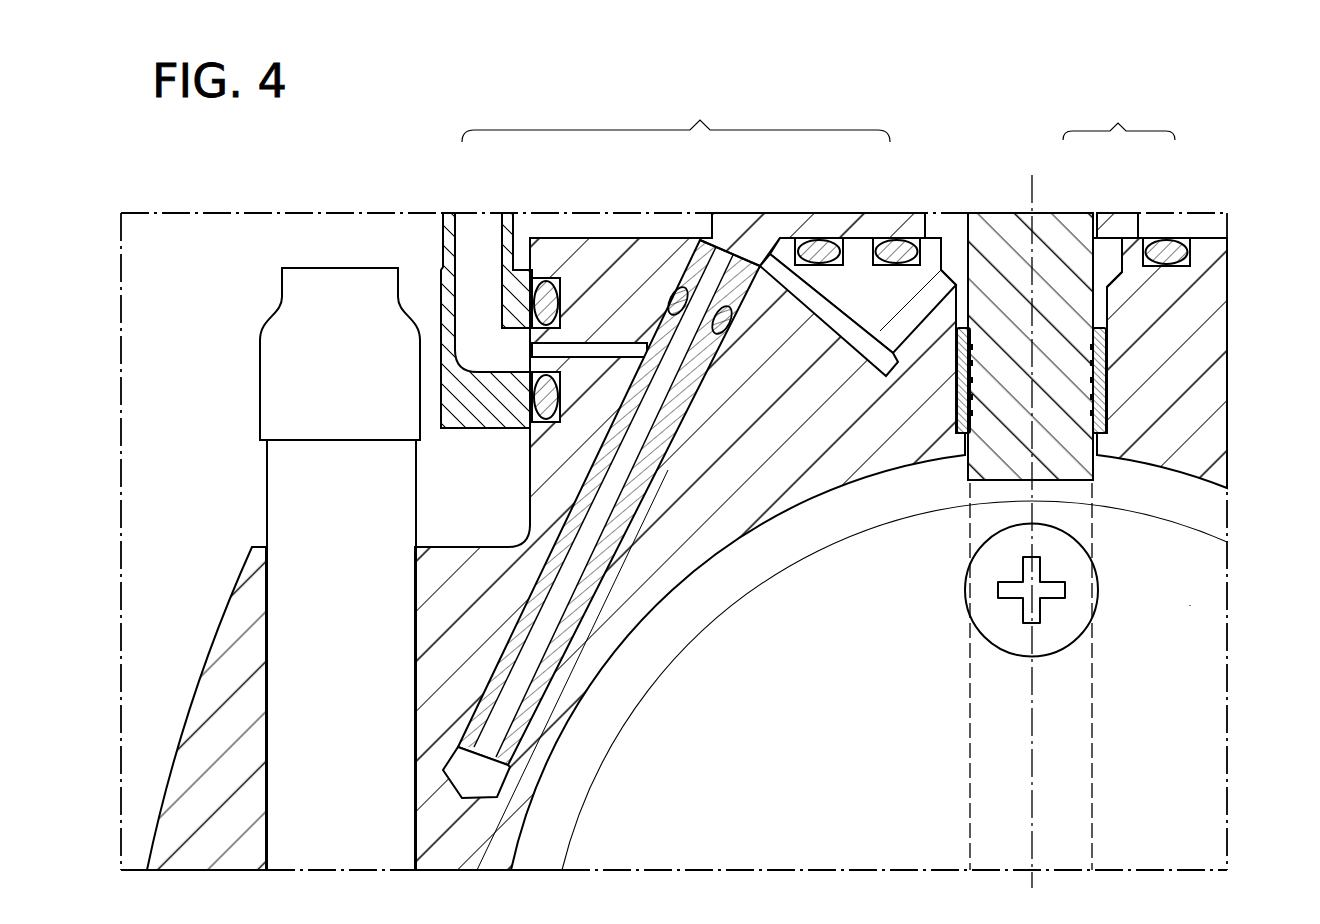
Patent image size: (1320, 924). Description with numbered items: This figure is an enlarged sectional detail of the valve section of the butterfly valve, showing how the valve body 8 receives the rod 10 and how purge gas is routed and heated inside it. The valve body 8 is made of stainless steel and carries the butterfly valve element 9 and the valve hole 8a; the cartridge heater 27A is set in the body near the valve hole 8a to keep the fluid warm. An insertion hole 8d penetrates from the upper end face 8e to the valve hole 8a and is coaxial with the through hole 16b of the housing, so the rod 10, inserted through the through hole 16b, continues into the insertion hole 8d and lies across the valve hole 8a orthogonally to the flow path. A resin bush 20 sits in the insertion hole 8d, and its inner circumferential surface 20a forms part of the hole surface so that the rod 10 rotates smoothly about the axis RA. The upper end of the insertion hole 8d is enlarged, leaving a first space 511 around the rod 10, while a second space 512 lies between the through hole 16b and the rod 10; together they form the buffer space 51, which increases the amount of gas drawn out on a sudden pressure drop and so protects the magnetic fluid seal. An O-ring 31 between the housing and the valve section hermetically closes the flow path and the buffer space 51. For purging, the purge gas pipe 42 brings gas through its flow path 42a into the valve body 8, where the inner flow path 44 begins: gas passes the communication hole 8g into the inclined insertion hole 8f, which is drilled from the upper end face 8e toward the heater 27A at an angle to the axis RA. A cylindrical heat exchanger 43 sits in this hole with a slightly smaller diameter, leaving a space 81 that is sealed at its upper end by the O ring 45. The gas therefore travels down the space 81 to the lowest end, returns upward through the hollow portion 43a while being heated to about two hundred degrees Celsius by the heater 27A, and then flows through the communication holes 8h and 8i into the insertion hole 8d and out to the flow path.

The valve body 8 is at (222, 564).
The valve hole 8a is at (1148, 468).
The insertion hole 8d is at (1108, 287).
The upper end face 8e is at (1194, 244).
The insertion hole 8f is at (568, 552).
The communication hole 8g is at (558, 300).
The communication hole 8h is at (806, 262).
The communication hole 8i is at (886, 300).
The butterfly valve element 9 is at (1190, 605).
The rod 10 is at (1030, 490).
The through hole 16b is at (1197, 238).
The bush 20 is at (1107, 382).
The inner circumferential surface 20a is at (1107, 438).
The heater 27A is at (323, 673).
The O-ring 31 is at (897, 243).
The purge gas pipe 42 is at (444, 250).
The flow path 42a is at (504, 252).
The heat exchanger 43 is at (617, 519).
The hollow portion 43a is at (712, 241).
The inner flow path 44 is at (676, 114).
The O ring 45 is at (732, 322).
The buffer space 51 is at (1119, 113).
The first space 511 is at (1094, 262).
The second space 512 is at (1111, 224).
The space 81 is at (592, 343).
The axis RA is at (1033, 178).